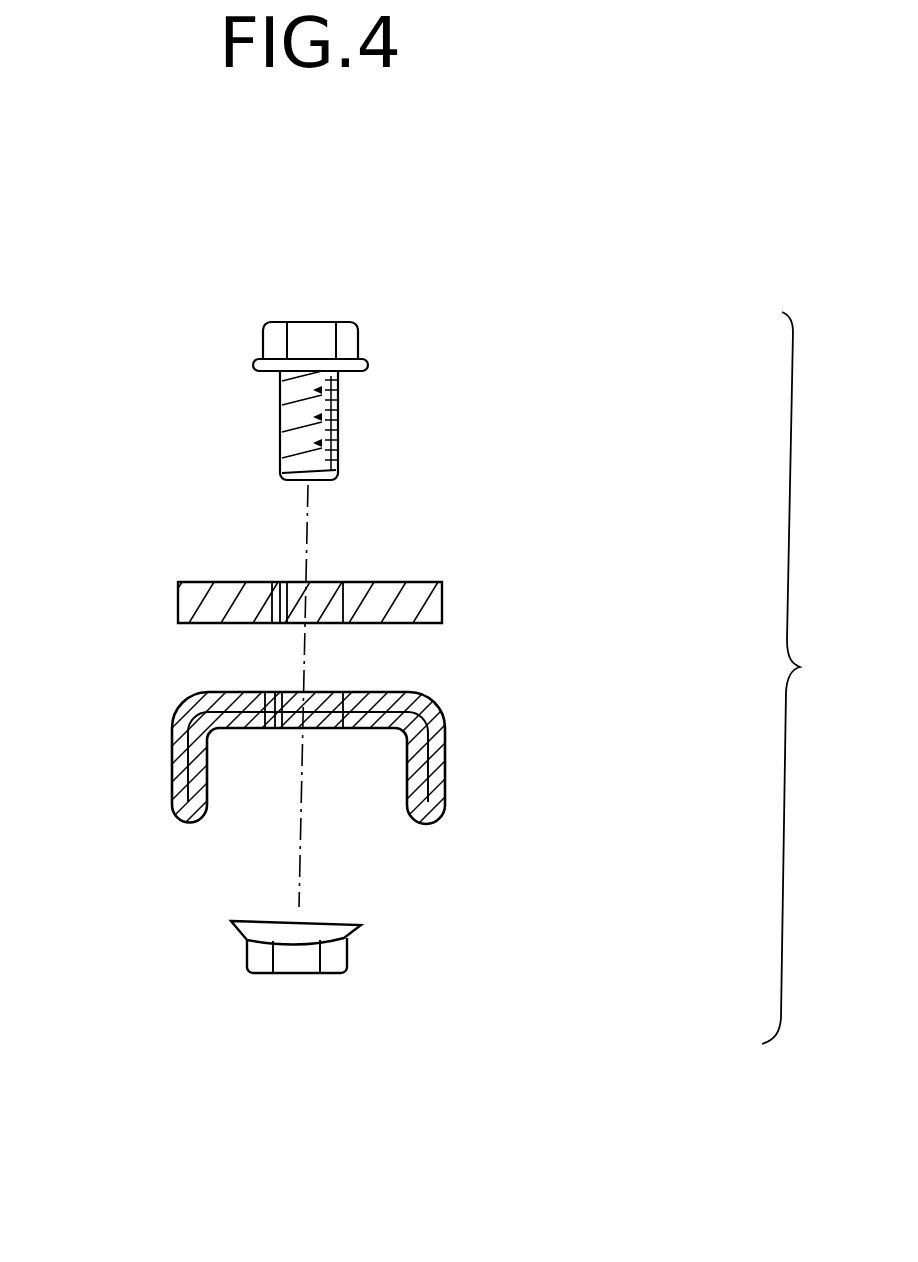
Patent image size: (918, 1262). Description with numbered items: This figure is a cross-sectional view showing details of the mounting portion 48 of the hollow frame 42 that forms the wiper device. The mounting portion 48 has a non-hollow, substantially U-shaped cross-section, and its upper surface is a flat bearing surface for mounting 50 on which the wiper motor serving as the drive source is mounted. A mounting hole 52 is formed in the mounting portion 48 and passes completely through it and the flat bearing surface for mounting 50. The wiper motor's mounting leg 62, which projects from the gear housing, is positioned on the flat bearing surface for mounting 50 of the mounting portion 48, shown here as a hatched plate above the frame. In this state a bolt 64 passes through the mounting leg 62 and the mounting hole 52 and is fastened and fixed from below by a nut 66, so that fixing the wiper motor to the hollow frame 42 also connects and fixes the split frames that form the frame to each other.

The bolt 64 is at (320, 333).
The mounting leg 62 is at (405, 582).
The mounting portion 48 is at (447, 735).
The hollow frame 42 is at (450, 733).
The flat bearing surface for mounting 50 is at (212, 690).
The mounting hole 52 is at (343, 722).
The nut 66 is at (300, 963).